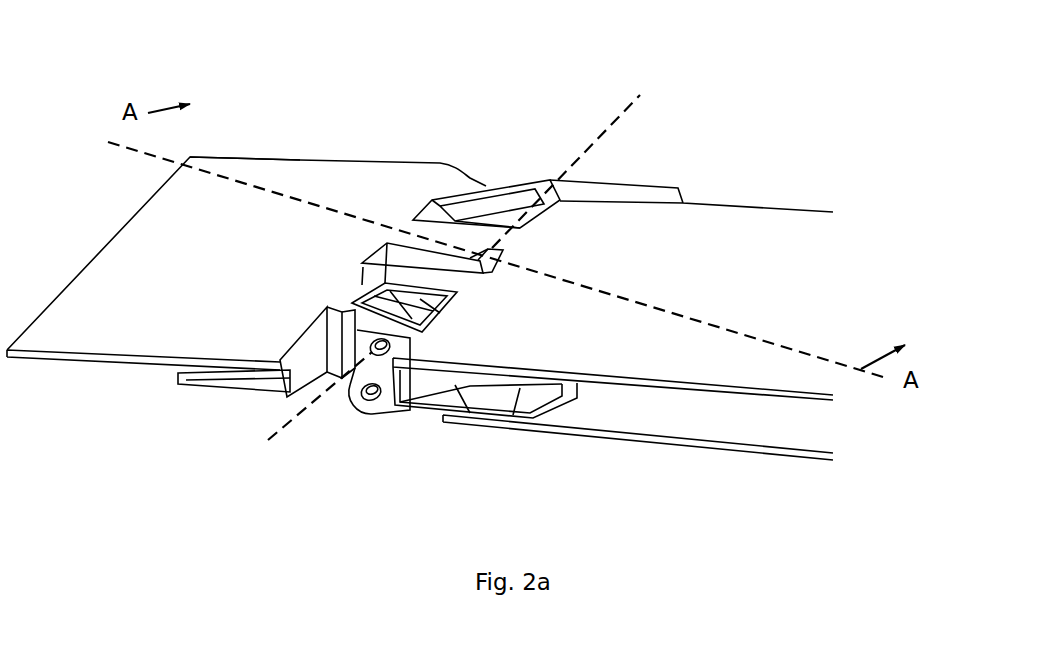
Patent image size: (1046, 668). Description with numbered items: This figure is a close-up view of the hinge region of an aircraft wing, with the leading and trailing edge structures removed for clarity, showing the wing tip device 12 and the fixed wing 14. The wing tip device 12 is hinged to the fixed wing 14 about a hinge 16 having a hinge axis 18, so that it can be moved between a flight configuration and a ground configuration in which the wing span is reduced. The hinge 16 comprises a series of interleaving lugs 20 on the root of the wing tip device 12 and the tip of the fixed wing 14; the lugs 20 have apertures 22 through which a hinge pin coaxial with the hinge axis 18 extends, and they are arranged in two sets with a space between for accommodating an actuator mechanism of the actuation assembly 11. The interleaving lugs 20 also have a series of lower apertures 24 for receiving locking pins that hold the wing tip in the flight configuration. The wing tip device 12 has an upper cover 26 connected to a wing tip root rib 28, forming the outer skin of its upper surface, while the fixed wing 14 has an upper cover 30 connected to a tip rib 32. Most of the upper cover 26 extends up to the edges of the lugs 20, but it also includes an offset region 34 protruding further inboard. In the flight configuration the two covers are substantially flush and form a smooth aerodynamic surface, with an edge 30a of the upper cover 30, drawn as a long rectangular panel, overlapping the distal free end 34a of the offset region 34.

The actuation assembly 11 is at (613, 287).
The wing tip device 12 is at (213, 222).
The fixed wing 14 is at (793, 210).
The hinge 16 is at (535, 198).
The hinge axis 18 is at (268, 440).
The interleaving lugs 20 is at (383, 320).
The apertures 22 is at (370, 392).
The lower apertures 24 is at (377, 358).
The upper cover 26 is at (270, 238).
The wing tip root rib 28 is at (290, 368).
The upper cover 30 is at (620, 343).
The edge 30a is at (490, 250).
The tip rib 32 is at (407, 377).
The offset region 34 is at (463, 262).
The distal free end 34a is at (486, 252).